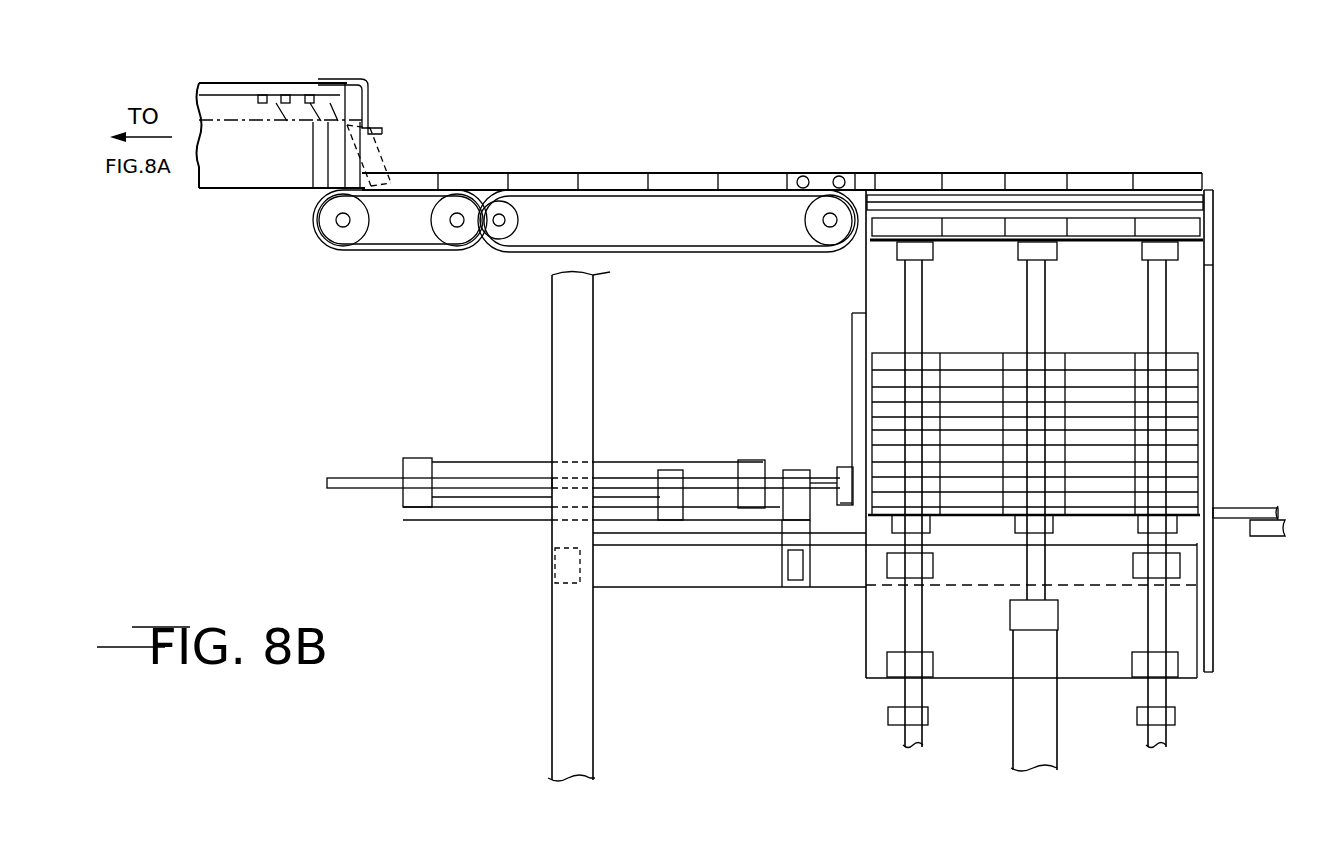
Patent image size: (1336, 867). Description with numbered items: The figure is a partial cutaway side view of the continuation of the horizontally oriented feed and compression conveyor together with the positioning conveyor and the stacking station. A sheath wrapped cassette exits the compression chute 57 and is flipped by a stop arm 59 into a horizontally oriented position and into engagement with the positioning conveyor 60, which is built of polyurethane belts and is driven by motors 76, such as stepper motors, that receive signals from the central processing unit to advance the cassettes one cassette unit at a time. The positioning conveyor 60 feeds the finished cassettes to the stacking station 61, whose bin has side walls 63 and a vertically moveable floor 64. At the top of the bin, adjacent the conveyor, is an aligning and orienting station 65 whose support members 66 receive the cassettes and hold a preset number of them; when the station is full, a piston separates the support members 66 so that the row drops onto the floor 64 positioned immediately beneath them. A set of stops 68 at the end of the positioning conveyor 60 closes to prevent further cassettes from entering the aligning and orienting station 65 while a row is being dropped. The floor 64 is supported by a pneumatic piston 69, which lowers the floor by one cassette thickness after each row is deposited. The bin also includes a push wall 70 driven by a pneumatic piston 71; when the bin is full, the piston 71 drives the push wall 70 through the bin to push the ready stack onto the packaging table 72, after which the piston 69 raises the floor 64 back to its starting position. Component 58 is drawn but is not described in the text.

The compression chute 57 is at (237, 190).
The retaining tabs 58 is at (297, 97).
The stop arm 59 is at (367, 110).
The positioning conveyor 60 is at (570, 259).
The stacking station 61 is at (1089, 456).
The side walls 63 is at (1195, 318).
The vertically moveable floor 64 is at (1103, 243).
The aligning and orienting station 65 is at (988, 163).
The support members 66 is at (1157, 212).
The stops 68 is at (846, 175).
The pneumatic piston 69 is at (1025, 720).
The push wall 70 is at (852, 395).
The pneumatic piston 71 is at (706, 467).
The packaging table 72 is at (1243, 503).
The motors 76 is at (331, 237).